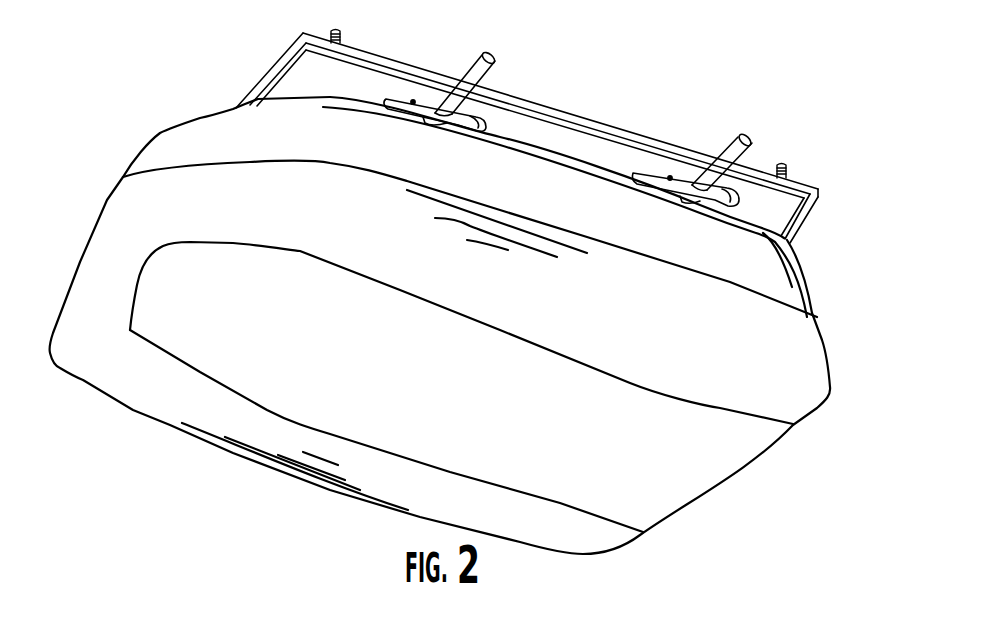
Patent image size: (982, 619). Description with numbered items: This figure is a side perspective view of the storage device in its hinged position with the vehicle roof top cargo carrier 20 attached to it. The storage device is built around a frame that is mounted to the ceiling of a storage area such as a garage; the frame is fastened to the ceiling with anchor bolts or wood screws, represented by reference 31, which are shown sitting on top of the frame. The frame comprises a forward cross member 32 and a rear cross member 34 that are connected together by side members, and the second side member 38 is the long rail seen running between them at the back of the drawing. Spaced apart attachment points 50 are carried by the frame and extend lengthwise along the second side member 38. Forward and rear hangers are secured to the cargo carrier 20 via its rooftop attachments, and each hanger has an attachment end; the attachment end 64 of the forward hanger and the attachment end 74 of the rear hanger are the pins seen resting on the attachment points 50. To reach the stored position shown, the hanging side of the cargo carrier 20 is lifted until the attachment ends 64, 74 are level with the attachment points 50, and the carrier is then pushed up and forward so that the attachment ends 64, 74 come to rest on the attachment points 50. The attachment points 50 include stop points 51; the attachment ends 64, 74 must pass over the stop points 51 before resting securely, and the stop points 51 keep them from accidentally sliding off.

The cargo carrier 20 is at (830, 388).
The anchor bolt 31 is at (336, 29).
The forward cross member 32 is at (258, 82).
The rear cross member 34 is at (817, 212).
The second side member 38 is at (558, 110).
The attachment point 50 is at (403, 97).
The stop point 51 is at (420, 100).
The attachment end 64 is at (491, 60).
The attachment end 74 is at (720, 153).